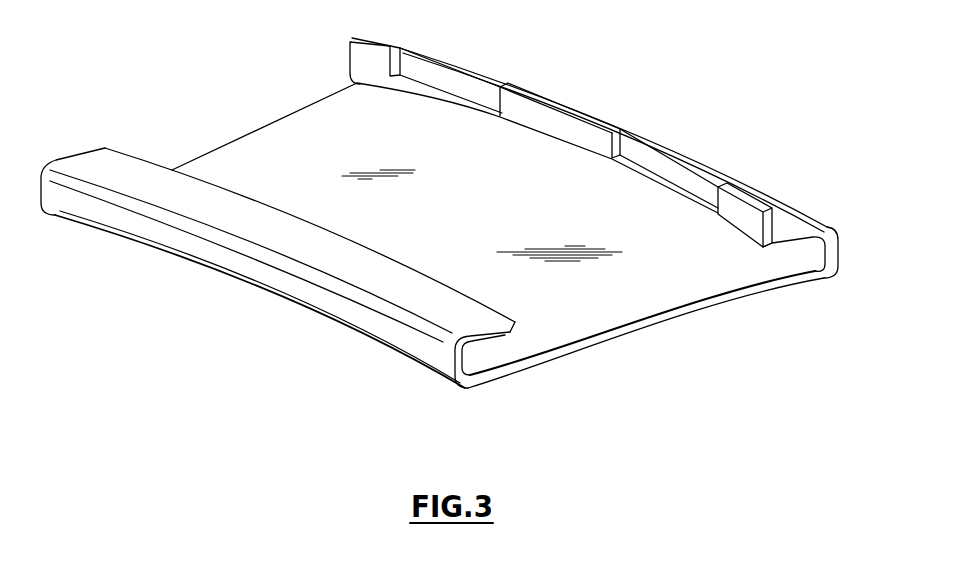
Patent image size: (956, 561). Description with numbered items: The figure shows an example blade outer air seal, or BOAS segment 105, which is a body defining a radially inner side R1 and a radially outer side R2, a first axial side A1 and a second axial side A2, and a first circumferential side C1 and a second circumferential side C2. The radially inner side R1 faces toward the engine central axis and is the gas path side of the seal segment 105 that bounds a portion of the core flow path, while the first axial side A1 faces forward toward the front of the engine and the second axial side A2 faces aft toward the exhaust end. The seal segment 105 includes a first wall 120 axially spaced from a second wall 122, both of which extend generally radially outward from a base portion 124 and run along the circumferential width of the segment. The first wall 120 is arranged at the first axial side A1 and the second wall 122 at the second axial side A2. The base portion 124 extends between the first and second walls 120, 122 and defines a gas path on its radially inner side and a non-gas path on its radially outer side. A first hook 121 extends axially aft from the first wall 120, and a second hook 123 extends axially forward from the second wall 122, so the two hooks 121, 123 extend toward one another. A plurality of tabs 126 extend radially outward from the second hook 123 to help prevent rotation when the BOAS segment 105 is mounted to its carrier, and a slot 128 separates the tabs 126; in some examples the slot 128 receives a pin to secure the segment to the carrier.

The BOAS segment 105 is at (731, 66).
The first wall 120 is at (460, 364).
The first hook 121 is at (490, 335).
The second wall 122 is at (830, 245).
The second hook 123 is at (803, 252).
The base portion 124 is at (687, 290).
The tabs 126 is at (740, 198).
The slot 128 is at (641, 171).
The first axial side A1 is at (436, 374).
The second axial side A2 is at (837, 260).
The first circumferential side C1 is at (228, 148).
The second circumferential side C2 is at (637, 330).
The radially inner side R1 is at (557, 363).
The radially outer side R2 is at (577, 328).